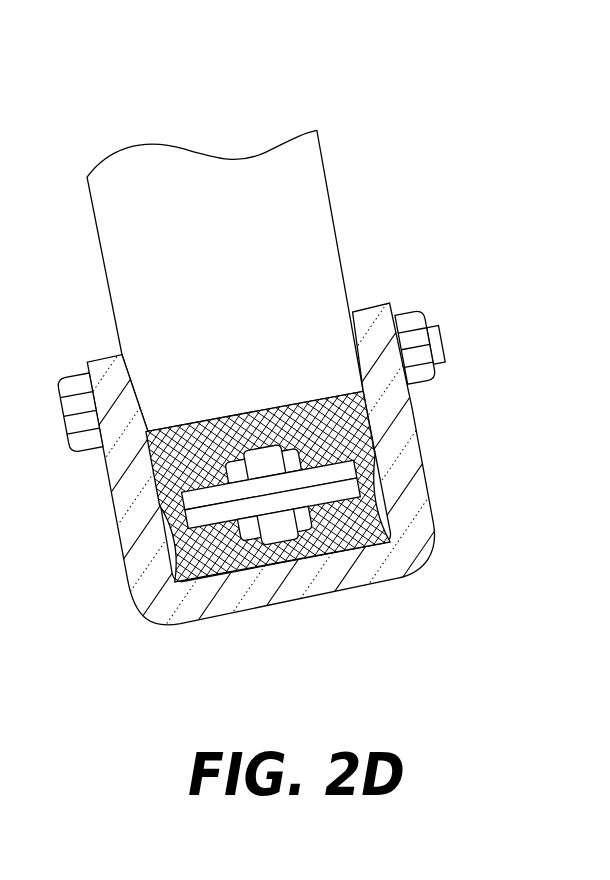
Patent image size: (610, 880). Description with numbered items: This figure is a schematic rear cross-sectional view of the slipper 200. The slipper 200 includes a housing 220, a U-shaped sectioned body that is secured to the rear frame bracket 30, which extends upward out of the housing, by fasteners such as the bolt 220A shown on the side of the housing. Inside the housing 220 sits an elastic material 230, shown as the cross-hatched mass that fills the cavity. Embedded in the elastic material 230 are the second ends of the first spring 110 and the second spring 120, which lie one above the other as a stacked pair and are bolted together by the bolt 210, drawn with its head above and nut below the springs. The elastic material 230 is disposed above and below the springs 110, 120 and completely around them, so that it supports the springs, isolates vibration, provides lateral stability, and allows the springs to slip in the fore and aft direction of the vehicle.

The rear frame bracket 30 is at (203, 183).
The slipper 200 is at (305, 422).
The housing 220 is at (431, 508).
The bolt 220A is at (407, 323).
The elastic material 230 is at (148, 500).
The second spring 120 is at (315, 478).
The first spring 110 is at (210, 517).
The bolt 210 is at (278, 528).